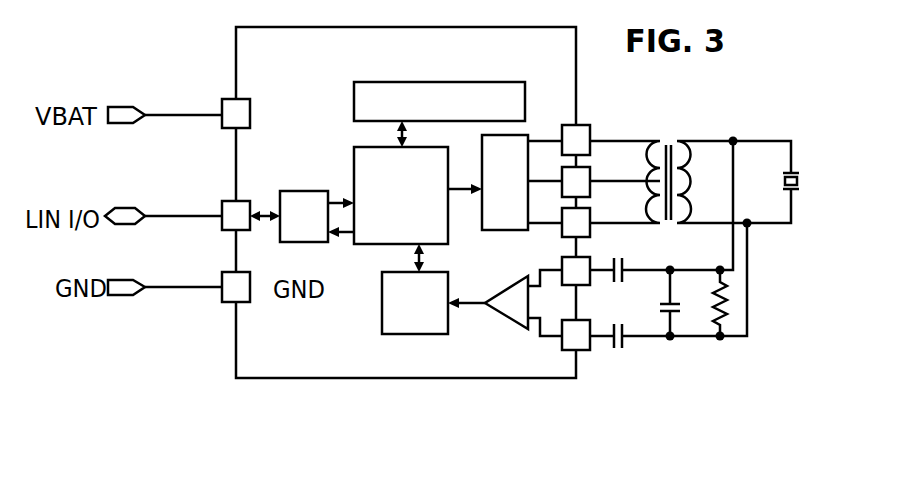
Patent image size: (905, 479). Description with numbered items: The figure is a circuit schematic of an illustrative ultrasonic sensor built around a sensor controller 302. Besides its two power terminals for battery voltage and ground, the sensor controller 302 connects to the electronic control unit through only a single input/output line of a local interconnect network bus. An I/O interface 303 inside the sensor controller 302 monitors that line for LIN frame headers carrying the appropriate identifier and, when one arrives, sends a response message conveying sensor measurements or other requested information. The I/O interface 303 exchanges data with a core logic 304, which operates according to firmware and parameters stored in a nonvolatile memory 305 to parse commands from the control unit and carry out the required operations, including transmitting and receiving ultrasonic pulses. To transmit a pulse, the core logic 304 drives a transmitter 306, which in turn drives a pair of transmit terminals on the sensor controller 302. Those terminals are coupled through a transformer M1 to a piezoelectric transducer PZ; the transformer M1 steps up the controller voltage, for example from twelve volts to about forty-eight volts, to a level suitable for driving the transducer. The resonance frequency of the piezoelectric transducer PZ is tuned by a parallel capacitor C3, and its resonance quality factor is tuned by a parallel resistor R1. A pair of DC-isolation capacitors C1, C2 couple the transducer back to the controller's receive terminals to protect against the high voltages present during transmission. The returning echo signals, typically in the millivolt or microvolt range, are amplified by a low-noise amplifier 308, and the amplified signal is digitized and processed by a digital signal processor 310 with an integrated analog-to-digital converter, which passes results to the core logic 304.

The sensor controller 302 is at (288, 379).
The I/O interface 303 is at (298, 191).
The core logic 304 is at (354, 180).
The nonvolatile memory 305 is at (354, 97).
The transmitter 306 is at (515, 231).
The low-noise amplifier 308 is at (515, 318).
The digital signal processor 310 is at (380, 320).
The transformer M1 is at (668, 166).
The piezoelectric transducer PZ is at (785, 182).
The DC-isolation capacitor C1 is at (661, 226).
The DC-isolation capacitor C2 is at (668, 300).
The parallel capacitor C3 is at (658, 303).
The parallel resistor R1 is at (703, 303).